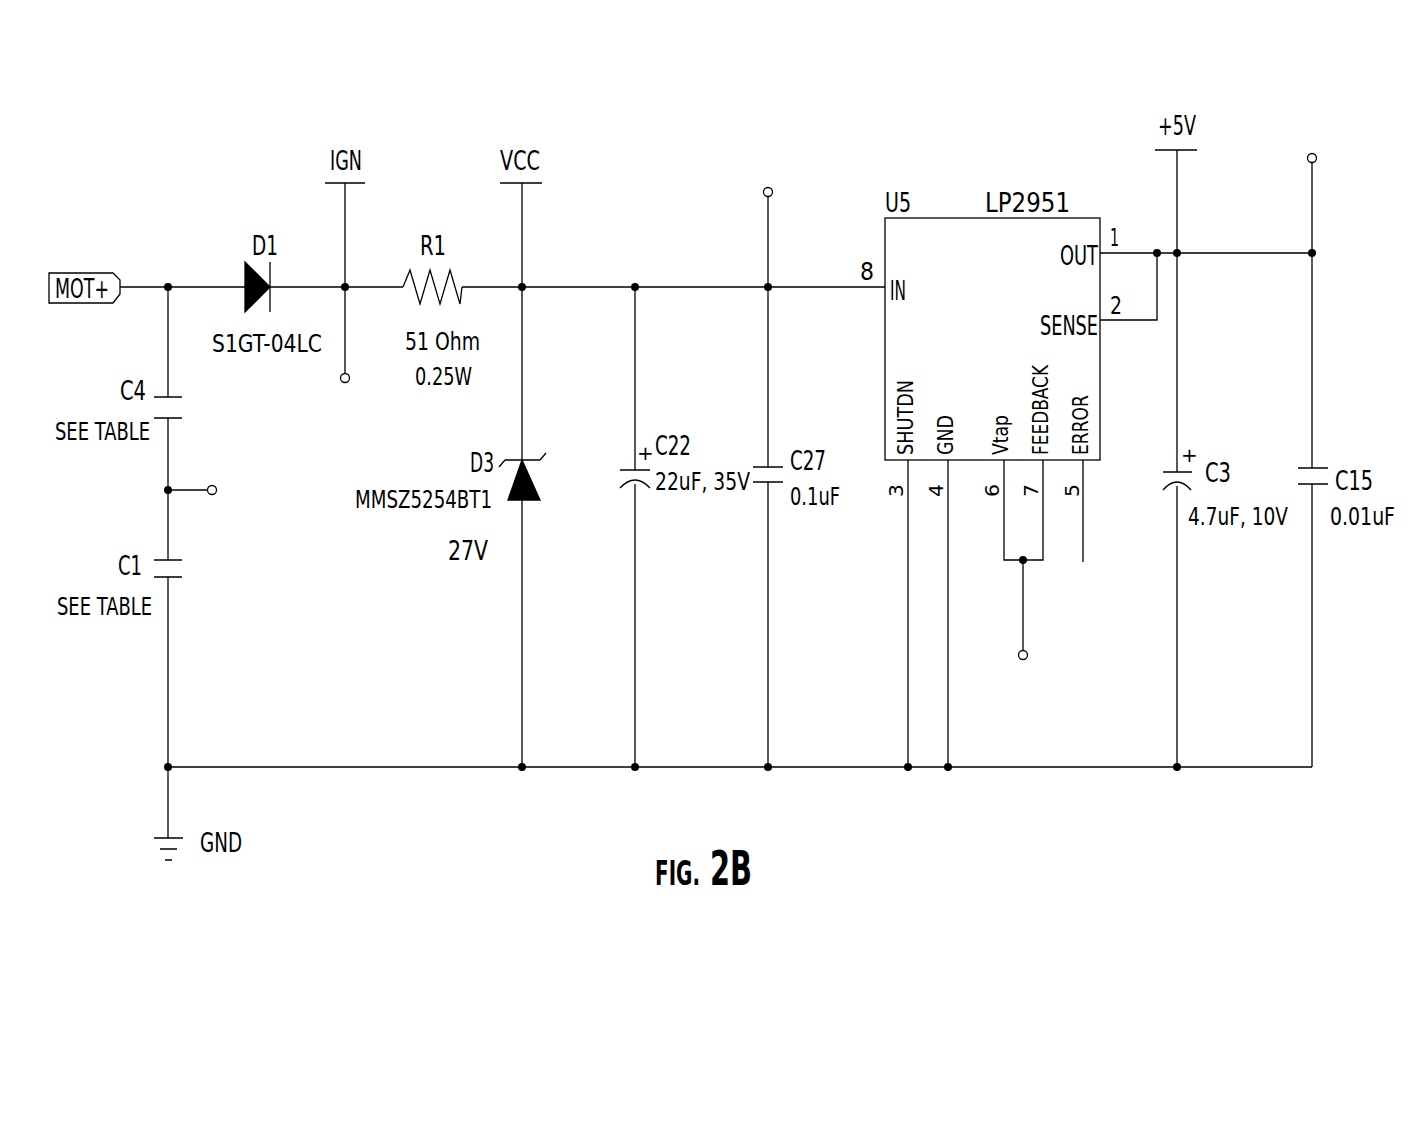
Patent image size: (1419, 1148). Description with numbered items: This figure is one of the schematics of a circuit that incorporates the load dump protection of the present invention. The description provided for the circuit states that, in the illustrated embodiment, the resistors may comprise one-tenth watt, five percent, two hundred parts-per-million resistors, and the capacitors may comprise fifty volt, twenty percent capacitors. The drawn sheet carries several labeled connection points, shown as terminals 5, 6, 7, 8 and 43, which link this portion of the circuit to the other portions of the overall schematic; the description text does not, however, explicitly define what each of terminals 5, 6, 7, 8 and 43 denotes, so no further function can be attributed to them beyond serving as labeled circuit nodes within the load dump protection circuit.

The terminal 5 is at (200, 492).
The terminal 6 is at (345, 406).
The terminal 7 is at (768, 167).
The terminal 8 is at (1311, 134).
The terminal 43 is at (1024, 639).